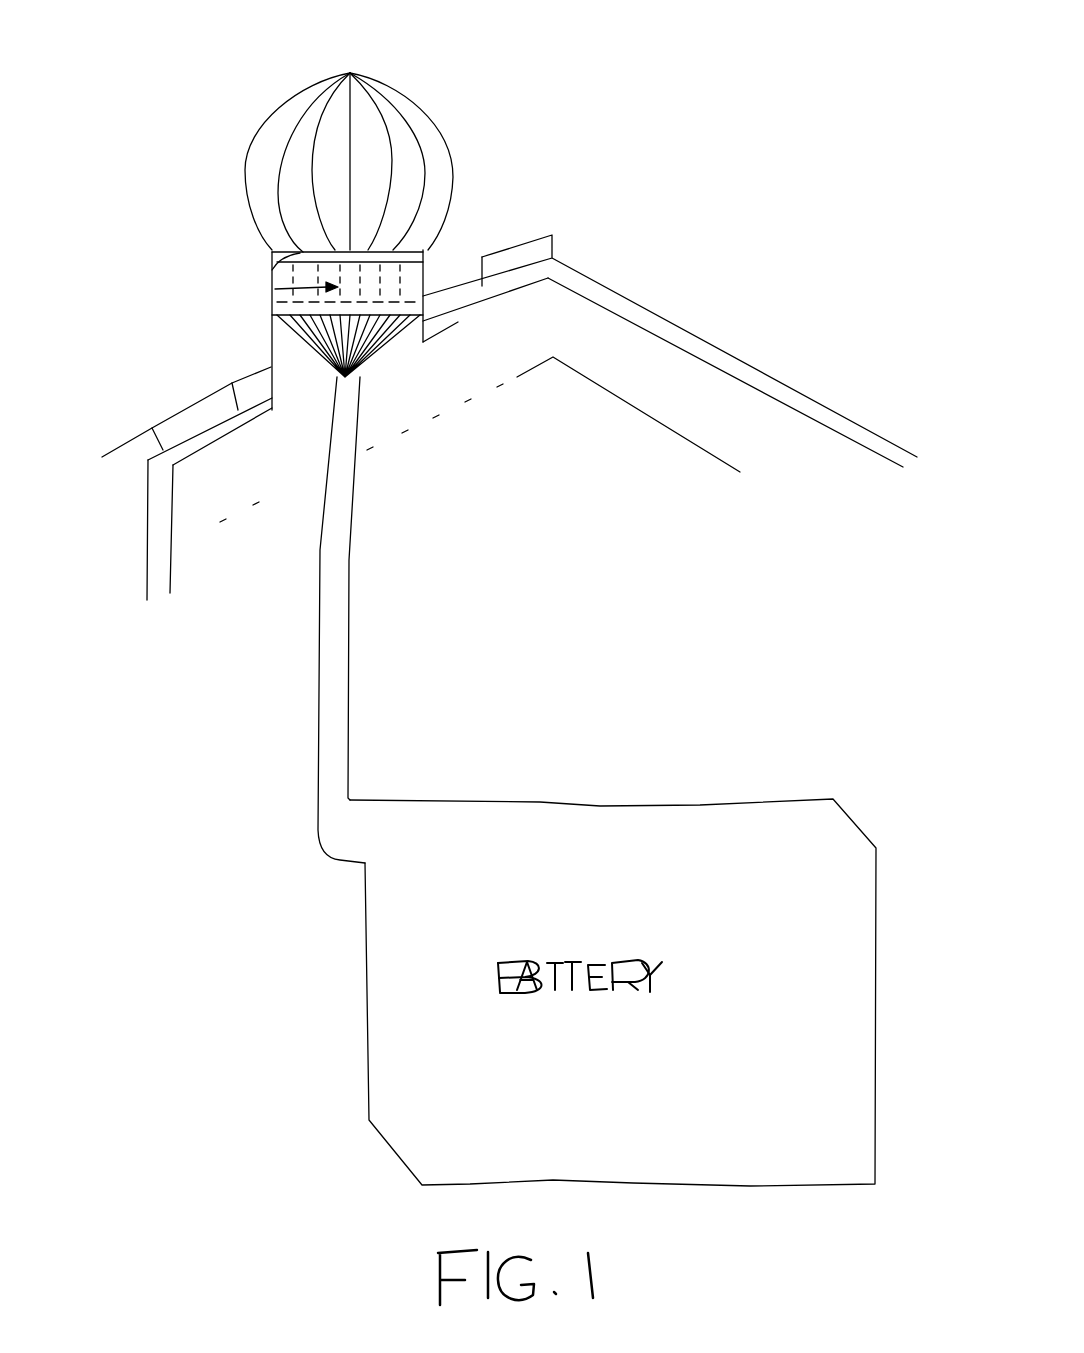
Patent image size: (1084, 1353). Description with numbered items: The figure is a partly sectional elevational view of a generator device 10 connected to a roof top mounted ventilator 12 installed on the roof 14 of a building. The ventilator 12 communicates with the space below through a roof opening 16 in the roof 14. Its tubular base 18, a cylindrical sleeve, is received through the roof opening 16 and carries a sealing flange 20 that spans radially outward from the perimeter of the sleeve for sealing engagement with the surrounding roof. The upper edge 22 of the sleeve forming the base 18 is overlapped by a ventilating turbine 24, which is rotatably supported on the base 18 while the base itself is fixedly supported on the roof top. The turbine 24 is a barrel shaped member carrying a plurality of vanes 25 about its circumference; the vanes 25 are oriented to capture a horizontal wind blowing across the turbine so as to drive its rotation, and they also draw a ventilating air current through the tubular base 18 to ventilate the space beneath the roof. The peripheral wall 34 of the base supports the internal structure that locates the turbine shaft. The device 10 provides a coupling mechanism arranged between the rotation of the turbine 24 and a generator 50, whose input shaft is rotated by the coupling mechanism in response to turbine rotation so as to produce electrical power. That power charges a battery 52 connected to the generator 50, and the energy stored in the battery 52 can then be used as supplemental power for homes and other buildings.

The generator device 10 is at (295, 435).
The roof top mounted ventilator 12 is at (490, 45).
The roof 14 is at (737, 358).
The roof opening 16 is at (388, 395).
The tubular base 18 is at (423, 270).
The sealing flange 20 is at (451, 323).
The upper edge 22 is at (273, 287).
The ventilating turbine 24 is at (178, 128).
The vanes 25 is at (295, 117).
The peripheral wall 34 is at (272, 262).
The generator 50 is at (275, 289).
The battery 52 is at (625, 800).